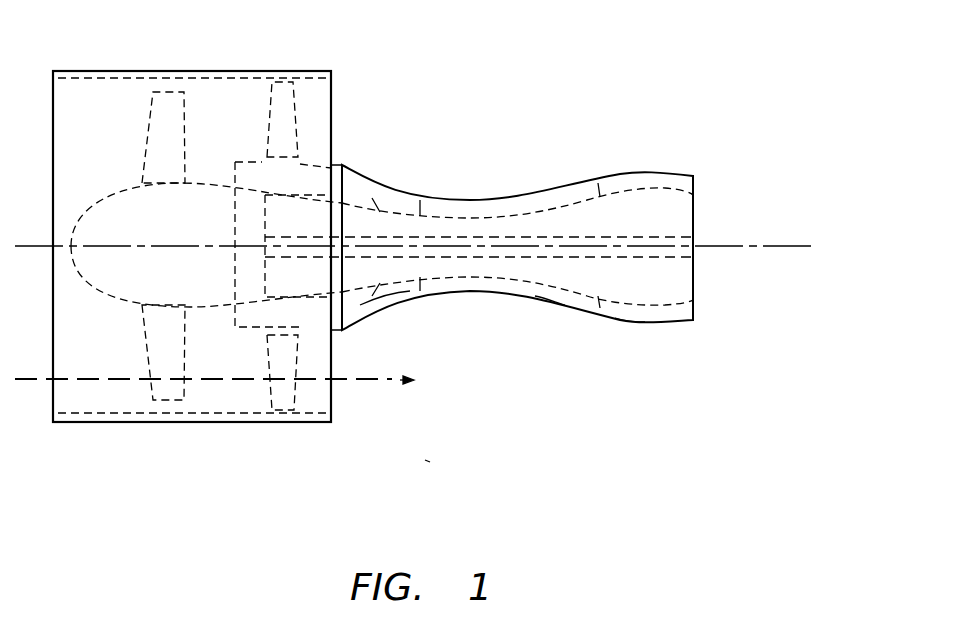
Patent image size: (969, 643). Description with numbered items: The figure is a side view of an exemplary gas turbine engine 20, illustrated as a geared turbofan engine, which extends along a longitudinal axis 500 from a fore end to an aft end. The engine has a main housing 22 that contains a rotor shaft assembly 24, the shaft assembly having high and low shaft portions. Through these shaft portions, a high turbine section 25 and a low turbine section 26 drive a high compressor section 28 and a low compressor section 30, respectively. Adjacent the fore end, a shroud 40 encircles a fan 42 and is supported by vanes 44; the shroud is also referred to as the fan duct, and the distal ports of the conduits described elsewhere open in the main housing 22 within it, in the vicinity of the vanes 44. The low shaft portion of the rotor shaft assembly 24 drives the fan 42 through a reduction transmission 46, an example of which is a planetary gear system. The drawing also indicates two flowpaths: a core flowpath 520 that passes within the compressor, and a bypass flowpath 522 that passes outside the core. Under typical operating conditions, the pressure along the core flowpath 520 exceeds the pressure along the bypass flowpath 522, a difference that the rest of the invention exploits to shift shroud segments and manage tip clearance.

The engine 20 is at (445, 472).
The main housing 22 is at (400, 190).
The rotor shaft assembly 24 is at (486, 238).
The high turbine section 25 is at (553, 312).
The low turbine section 26 is at (630, 331).
The high compressor section 28 is at (405, 300).
The low compressor section 30 is at (316, 175).
The shroud 40 is at (255, 423).
The fan 42 is at (165, 404).
The vanes 44 is at (283, 73).
The reduction transmission 46 is at (257, 293).
The longitudinal axis 500 is at (786, 249).
The core flowpath 520 is at (289, 188).
The bypass flowpath 522 is at (392, 379).